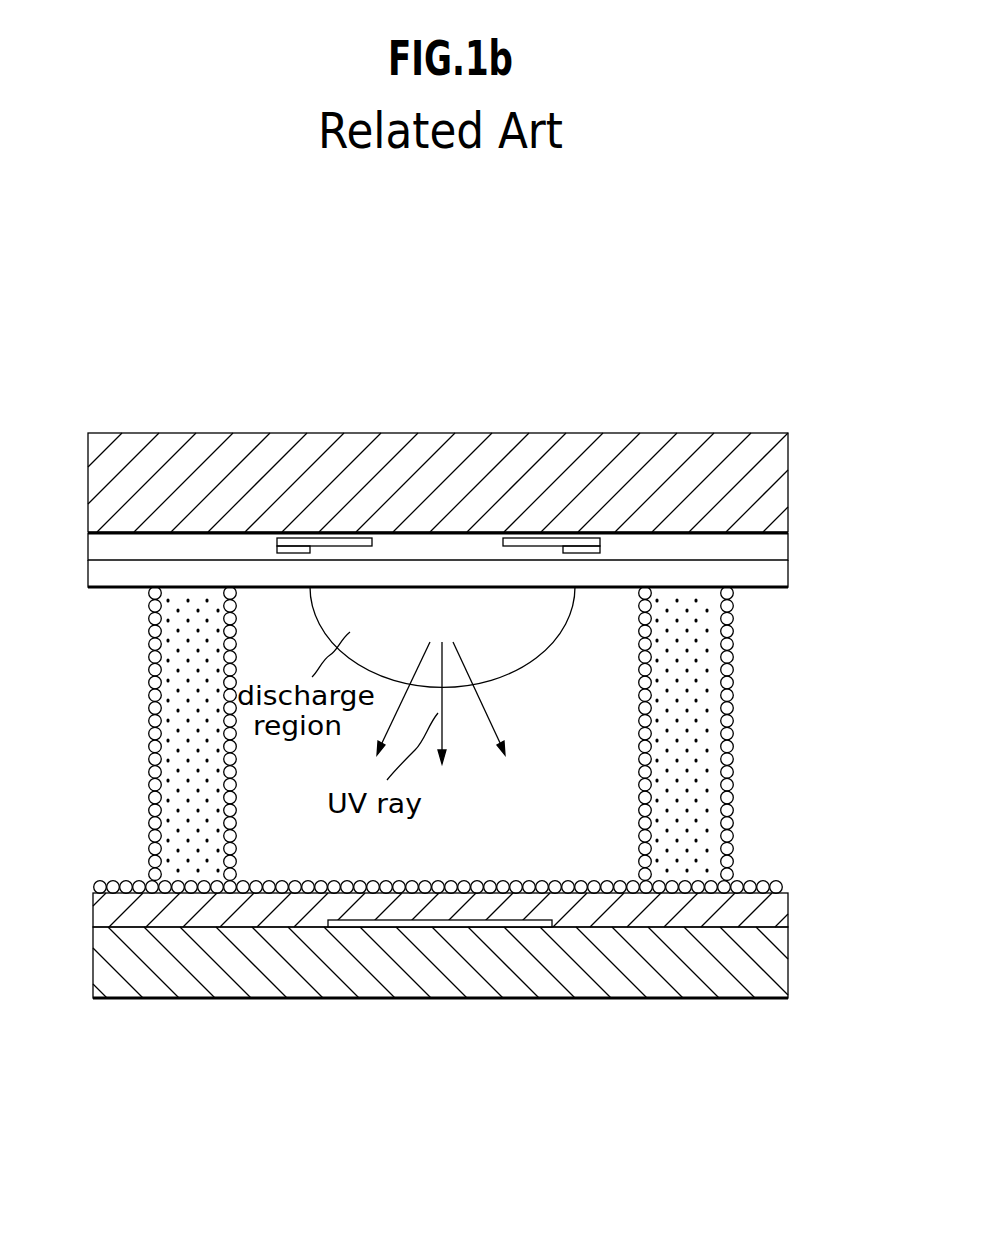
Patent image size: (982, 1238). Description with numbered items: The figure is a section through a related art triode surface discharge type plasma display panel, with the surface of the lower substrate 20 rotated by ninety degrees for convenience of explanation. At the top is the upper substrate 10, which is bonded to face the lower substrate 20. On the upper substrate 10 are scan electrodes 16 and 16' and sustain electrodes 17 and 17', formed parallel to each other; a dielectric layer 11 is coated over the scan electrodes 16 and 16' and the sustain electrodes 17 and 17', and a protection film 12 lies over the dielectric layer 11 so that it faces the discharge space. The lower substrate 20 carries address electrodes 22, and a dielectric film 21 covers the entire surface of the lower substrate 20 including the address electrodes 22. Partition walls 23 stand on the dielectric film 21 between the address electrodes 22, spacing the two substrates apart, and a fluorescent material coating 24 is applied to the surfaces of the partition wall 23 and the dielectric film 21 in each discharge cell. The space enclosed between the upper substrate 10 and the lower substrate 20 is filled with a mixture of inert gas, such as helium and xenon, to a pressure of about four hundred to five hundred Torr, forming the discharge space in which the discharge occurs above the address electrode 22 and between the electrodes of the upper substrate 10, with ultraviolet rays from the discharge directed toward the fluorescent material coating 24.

The upper substrate 10 is at (780, 470).
The dielectric layer 11 is at (780, 540).
The protection film 12 is at (780, 580).
The scan electrode 16 is at (324, 464).
The scan electrode 16' is at (261, 471).
The sustain electrode 17 is at (551, 463).
The sustain electrode 17' is at (613, 466).
The lower substrate 20 is at (780, 970).
The dielectric film 21 is at (780, 912).
The address electrode 22 is at (450, 920).
The partition wall 23 is at (176, 676).
The fluorescent material coating 24 is at (650, 820).